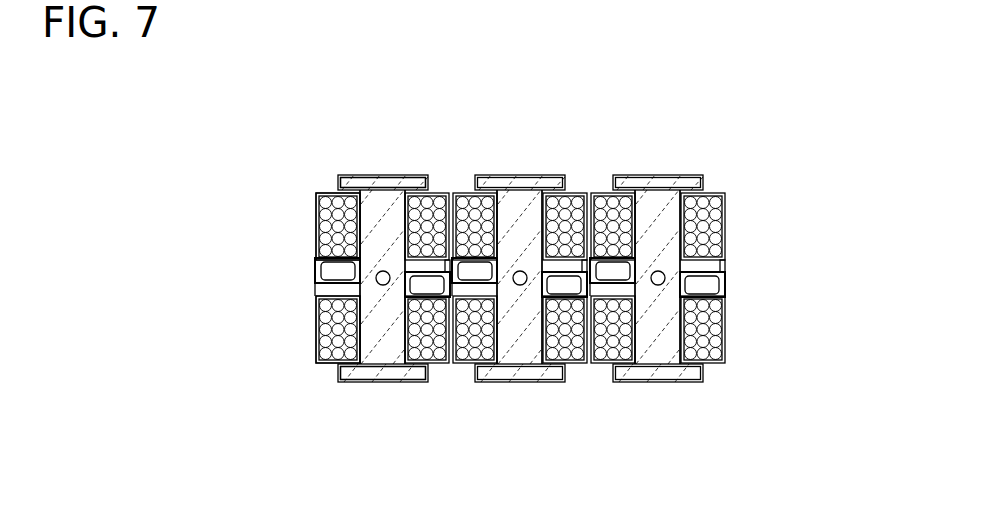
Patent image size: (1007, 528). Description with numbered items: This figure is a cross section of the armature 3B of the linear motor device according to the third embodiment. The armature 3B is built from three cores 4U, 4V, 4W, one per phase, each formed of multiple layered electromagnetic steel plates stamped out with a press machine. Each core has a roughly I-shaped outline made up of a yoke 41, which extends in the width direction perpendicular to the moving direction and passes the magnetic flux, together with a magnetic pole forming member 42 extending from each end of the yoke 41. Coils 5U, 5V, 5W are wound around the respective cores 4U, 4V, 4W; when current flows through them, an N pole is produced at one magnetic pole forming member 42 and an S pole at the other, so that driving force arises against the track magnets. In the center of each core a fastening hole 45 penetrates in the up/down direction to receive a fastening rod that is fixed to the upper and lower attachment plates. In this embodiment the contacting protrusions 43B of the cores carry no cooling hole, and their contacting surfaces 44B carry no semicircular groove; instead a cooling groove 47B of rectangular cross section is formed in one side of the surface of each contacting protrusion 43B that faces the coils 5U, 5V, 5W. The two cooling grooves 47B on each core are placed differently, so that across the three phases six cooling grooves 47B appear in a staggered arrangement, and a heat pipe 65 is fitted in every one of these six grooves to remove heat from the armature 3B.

The armature 3B is at (768, 136).
The core 4U is at (382, 383).
The core 4V is at (505, 383).
The core 4W is at (652, 383).
The coil 5U is at (316, 366).
The coil 5V is at (460, 362).
The coil 5W is at (598, 362).
The yoke 41 is at (315, 210).
The magnetic pole forming member 42 is at (337, 182).
The contacting protrusion 43B is at (313, 318).
The contacting surface 44B is at (313, 283).
The fastening hole 45 is at (373, 362).
The cooling groove 47B is at (313, 265).
The heat pipe 65 is at (389, 270).